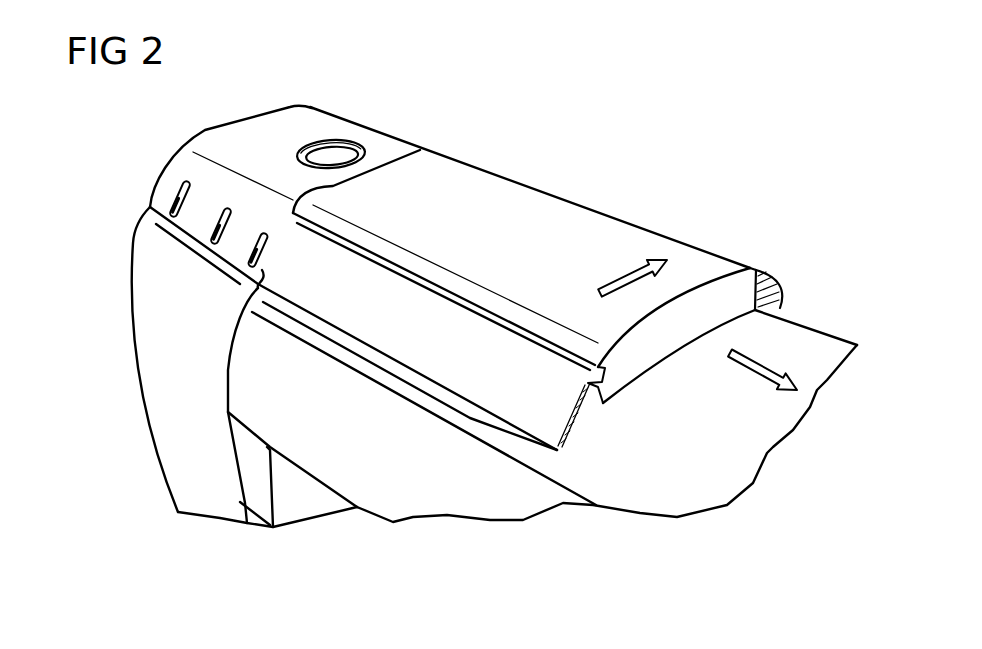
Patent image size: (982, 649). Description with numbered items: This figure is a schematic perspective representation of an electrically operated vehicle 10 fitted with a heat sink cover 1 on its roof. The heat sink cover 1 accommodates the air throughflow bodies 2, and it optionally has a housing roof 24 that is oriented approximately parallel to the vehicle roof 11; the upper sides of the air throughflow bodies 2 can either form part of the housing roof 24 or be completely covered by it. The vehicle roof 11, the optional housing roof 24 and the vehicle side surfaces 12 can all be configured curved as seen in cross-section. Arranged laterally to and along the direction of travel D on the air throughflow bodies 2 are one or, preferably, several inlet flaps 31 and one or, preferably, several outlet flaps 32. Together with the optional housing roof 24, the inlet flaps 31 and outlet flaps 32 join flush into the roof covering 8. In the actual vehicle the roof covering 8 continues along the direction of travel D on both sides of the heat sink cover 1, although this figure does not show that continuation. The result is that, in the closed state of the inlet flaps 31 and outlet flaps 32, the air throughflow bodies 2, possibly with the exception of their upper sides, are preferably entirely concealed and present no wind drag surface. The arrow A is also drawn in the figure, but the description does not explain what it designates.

The heat sink cover 1 is at (610, 216).
The air throughflow body 2 is at (640, 358).
The roof covering 8 is at (387, 150).
The electrically operated vehicle 10 is at (128, 366).
The vehicle roof 11 is at (807, 333).
The vehicle side surface 12 is at (423, 505).
The housing roof 24 is at (478, 188).
The inlet flap 31 is at (502, 408).
The outlet flap 32 is at (723, 270).
The sliding direction arrow A is at (618, 280).
The direction of travel D is at (757, 378).